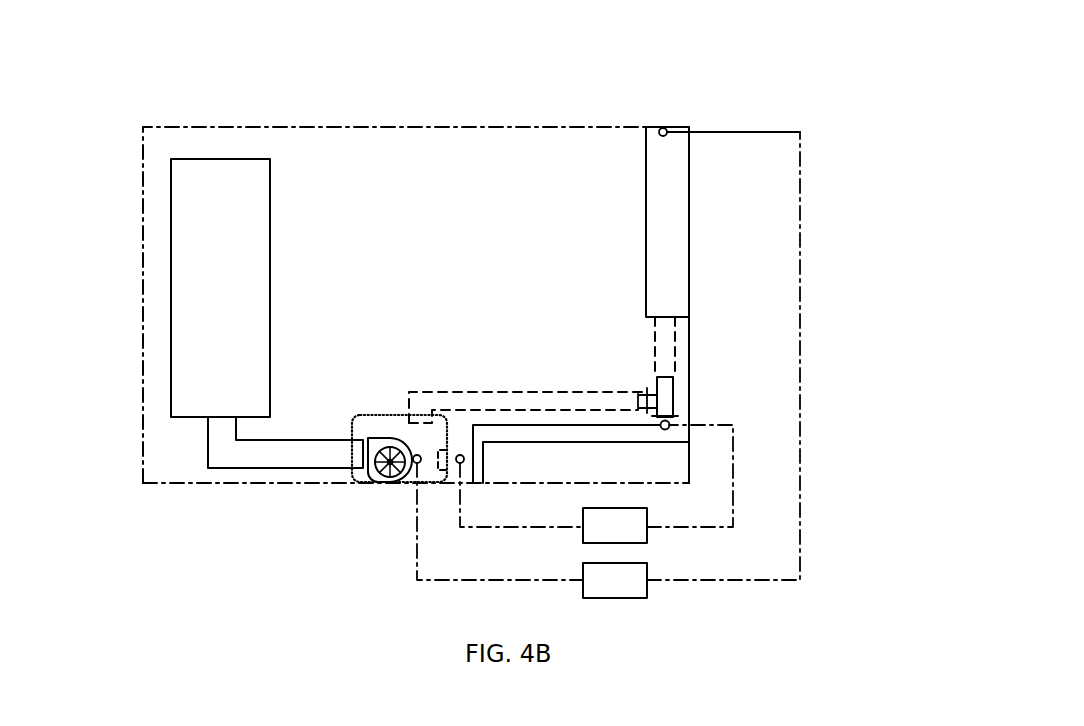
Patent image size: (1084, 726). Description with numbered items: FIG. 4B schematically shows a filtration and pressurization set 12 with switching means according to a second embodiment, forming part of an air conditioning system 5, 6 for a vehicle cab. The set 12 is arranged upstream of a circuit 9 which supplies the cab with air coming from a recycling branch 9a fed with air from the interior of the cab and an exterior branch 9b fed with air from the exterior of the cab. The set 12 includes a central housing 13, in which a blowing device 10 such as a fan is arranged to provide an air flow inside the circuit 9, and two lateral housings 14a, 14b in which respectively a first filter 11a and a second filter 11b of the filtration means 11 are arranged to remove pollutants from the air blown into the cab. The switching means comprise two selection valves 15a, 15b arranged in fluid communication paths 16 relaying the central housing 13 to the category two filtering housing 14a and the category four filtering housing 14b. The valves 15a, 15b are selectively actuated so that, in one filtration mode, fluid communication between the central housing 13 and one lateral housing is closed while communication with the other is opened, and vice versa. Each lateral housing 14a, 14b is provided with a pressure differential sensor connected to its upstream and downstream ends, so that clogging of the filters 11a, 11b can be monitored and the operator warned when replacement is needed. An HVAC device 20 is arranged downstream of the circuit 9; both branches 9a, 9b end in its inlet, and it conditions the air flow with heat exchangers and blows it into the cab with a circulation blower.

The air conditioning system 5 is at (416, 247).
The air conditioning system 6 is at (494, 127).
The circuit 9 is at (218, 488).
The recycling branch 9a is at (218, 488).
The exterior branch 9b is at (230, 458).
The blowing device 10 is at (383, 483).
The filtration means 11 is at (717, 316).
The first filter 11a is at (790, 221).
The second filter 11b is at (717, 442).
The filtration and pressurization set 12 is at (557, 365).
The central housing 13 is at (408, 479).
The first lateral housing 14a is at (672, 174).
The second lateral housing 14b is at (677, 472).
The first selection valve 15a is at (657, 398).
The second selection valve 15b is at (668, 421).
The fluid communication paths 16 is at (655, 340).
The HVAC device 20 is at (190, 231).